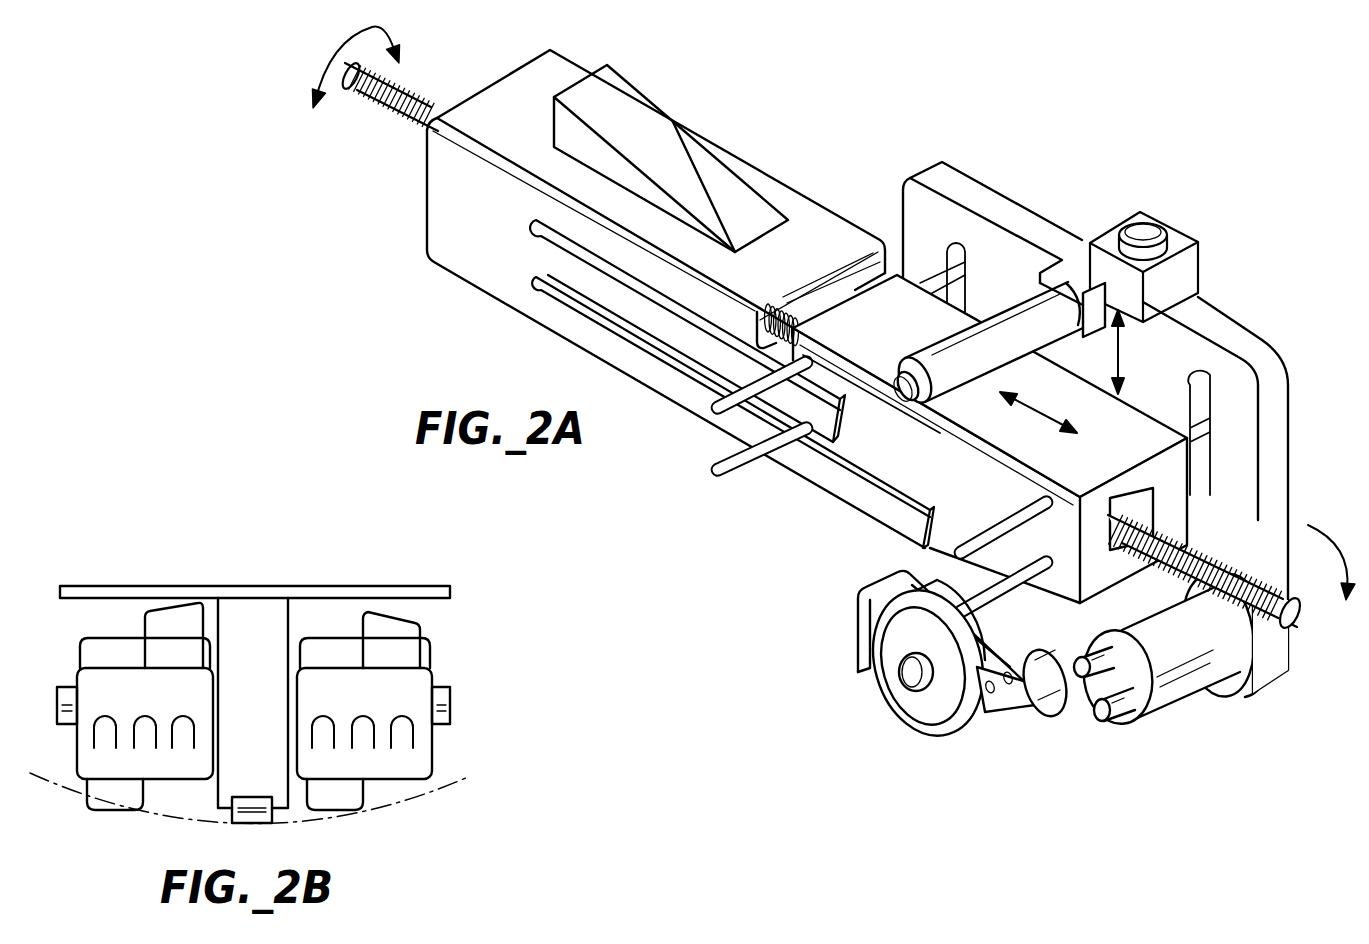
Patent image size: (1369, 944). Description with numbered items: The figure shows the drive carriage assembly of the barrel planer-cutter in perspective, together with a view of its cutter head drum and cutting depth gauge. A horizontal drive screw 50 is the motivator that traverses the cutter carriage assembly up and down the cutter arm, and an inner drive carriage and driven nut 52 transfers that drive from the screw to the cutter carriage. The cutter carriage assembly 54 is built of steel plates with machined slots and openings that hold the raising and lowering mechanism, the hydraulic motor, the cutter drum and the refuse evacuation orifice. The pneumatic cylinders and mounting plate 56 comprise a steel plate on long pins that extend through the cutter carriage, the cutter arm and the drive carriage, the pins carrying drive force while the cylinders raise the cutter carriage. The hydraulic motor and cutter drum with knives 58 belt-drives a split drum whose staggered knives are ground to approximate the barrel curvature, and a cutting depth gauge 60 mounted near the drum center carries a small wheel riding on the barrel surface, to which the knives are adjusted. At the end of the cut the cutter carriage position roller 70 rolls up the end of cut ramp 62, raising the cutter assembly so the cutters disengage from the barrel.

In FIG. 2A, the horizontal drive screw 50 is at (1240, 563).
In FIG. 2A, the inner drive carriage and driven nut 52 is at (1128, 425).
In FIG. 2A, the cutter carriage assembly 54 is at (970, 197).
In FIG. 2A, the pneumatic cylinders and mounting plate 56 is at (1142, 230).
In FIG. 2A, the hydraulic motor and cutter drum with knives 58 is at (897, 603).
In FIG. 2B, the hydraulic motor and cutter drum with knives 58 is at (410, 692).
In FIG. 2B, the cutting depth gauge 60 is at (255, 812).
In FIG. 2A, the end of cut ramp 62 is at (640, 122).
In FIG. 2A, the cutter carriage position roller 70 is at (1060, 303).